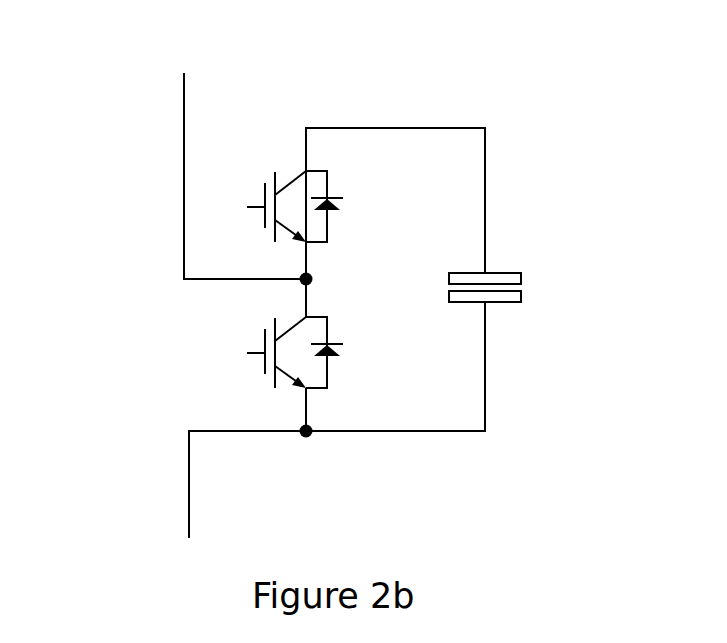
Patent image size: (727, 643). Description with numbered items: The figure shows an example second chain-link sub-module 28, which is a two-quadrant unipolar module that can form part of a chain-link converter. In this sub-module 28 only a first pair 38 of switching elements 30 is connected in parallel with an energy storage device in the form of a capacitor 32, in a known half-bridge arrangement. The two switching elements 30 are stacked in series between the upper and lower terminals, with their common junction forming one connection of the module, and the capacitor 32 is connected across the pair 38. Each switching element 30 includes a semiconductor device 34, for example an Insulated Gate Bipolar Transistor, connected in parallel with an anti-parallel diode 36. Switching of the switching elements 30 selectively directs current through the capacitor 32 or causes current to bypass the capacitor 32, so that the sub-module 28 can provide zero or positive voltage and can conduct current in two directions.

The chain-link sub-module 28 is at (136, 82).
The switching element 30 is at (307, 230).
The capacitor 32 is at (502, 272).
The semiconductor device 34 is at (264, 344).
The anti-parallel diode 36 is at (332, 355).
The first pair of switching elements 38 is at (283, 146).